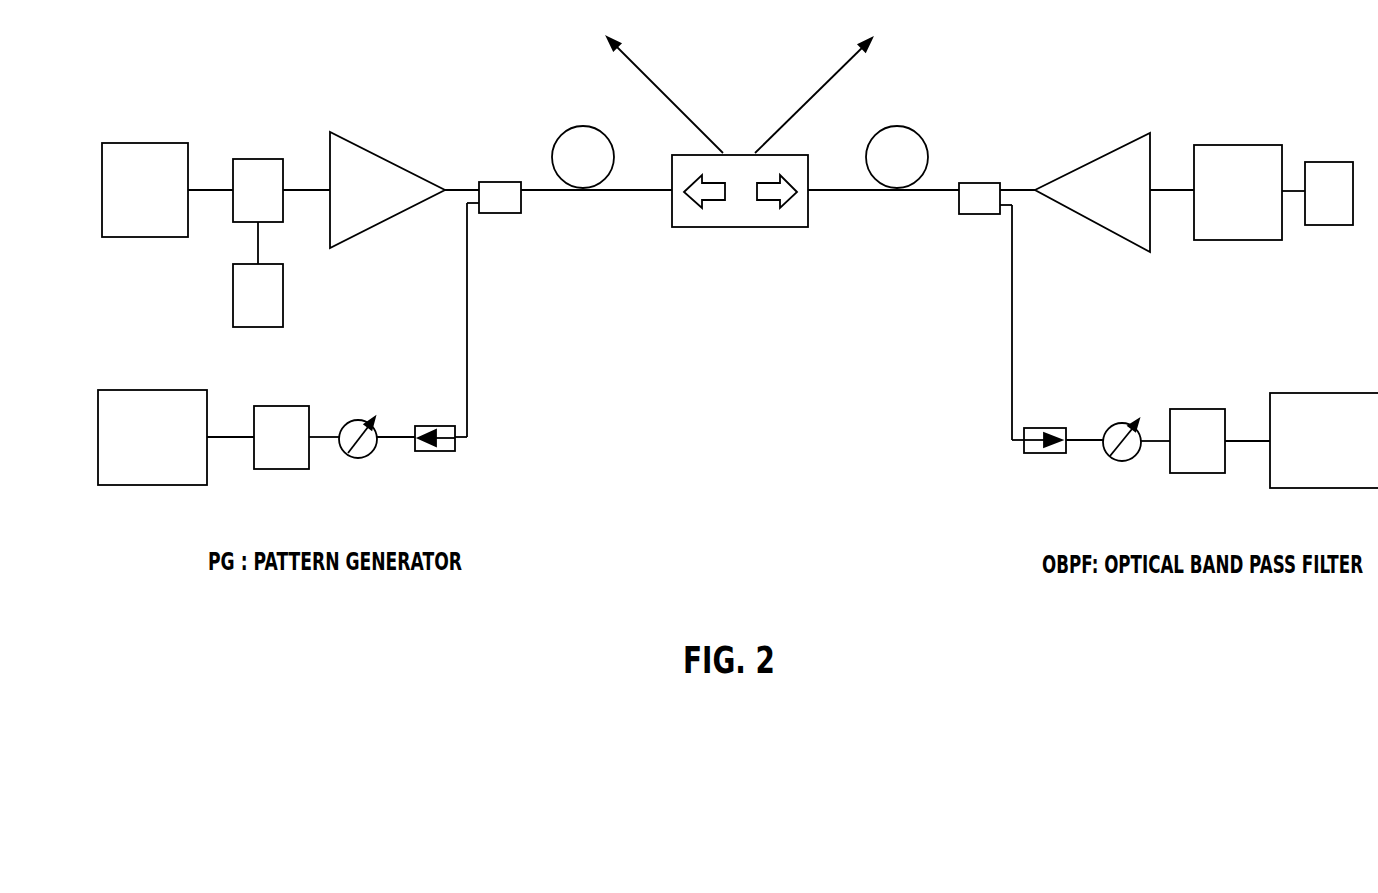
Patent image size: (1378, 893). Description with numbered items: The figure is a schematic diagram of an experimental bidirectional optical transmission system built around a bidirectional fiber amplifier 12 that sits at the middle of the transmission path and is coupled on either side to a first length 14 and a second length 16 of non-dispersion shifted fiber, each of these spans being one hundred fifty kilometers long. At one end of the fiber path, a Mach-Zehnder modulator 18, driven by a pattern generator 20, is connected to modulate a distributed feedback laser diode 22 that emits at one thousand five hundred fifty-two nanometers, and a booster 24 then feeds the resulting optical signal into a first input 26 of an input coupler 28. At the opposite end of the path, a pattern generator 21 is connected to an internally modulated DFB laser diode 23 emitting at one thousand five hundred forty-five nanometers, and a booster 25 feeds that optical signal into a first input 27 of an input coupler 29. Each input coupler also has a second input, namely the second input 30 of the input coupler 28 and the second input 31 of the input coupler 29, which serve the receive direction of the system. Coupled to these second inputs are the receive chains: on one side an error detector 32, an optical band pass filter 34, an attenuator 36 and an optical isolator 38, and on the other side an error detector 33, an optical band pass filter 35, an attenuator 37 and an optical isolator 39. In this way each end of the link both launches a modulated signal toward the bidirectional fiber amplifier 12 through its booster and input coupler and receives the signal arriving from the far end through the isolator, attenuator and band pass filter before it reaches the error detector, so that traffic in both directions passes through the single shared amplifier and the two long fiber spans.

The bidirectional fiber amplifier 12 is at (672, 208).
The first length of non-dispersion shifted fiber 14 is at (556, 134).
The second length of non-dispersion shifted fiber 16 is at (923, 137).
The Mach-Zehnder modulator 18 is at (271, 214).
The pattern generator 20 is at (271, 318).
The pattern generator 21 is at (1342, 217).
The distributed feedback laser diode 22 is at (158, 227).
The internally modulated DFB laser diode 23 is at (1250, 229).
The booster 24 is at (357, 226).
The booster 25 is at (1147, 229).
The first input of input coupler 26 is at (453, 186).
The first input of input coupler 27 is at (1031, 188).
The input coupler 28 is at (512, 207).
The input coupler 29 is at (991, 209).
The second input of input coupler 30 is at (468, 362).
The second input of input coupler 31 is at (1012, 363).
The error detector 32 is at (162, 476).
The error detector 33 is at (1337, 477).
The optical band pass filter 34 is at (292, 462).
The optical band pass filter 35 is at (1209, 464).
The attenuator 36 is at (357, 421).
The attenuator 37 is at (1128, 424).
The optical isolator 38 is at (426, 426).
The optical isolator 39 is at (1058, 428).